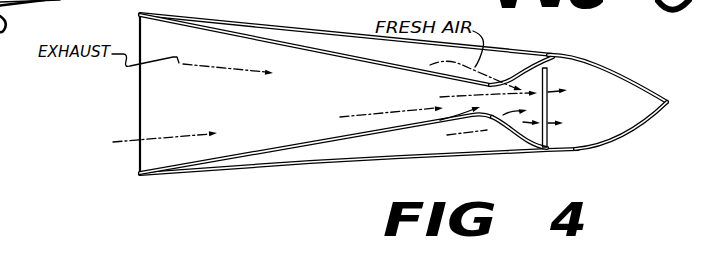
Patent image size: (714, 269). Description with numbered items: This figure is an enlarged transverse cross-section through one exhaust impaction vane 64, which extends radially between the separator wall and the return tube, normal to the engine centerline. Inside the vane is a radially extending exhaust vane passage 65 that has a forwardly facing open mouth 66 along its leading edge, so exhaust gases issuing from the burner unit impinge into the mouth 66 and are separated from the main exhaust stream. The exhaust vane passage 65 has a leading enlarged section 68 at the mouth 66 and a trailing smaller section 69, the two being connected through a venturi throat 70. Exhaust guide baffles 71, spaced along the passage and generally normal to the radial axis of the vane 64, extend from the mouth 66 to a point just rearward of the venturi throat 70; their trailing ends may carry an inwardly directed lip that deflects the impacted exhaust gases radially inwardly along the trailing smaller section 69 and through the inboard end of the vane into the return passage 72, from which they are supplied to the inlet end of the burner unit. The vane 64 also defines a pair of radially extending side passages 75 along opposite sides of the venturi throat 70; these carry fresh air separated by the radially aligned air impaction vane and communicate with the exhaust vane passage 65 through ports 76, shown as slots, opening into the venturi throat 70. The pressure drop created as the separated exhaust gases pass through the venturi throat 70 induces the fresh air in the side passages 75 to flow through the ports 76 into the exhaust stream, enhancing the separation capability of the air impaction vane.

The exhaust impaction vane 64 is at (344, 30).
The exhaust vane passage 65 is at (146, 153).
The open mouth 66 is at (140, 83).
The leading enlarged section 68 is at (240, 53).
The trailing smaller section 69 is at (618, 82).
The venturi throat 70 is at (467, 114).
The exhaust guide baffles 71 is at (320, 105).
The return passage 72 is at (610, 117).
The side passages 75 is at (488, 54).
The ports 76 is at (512, 74).